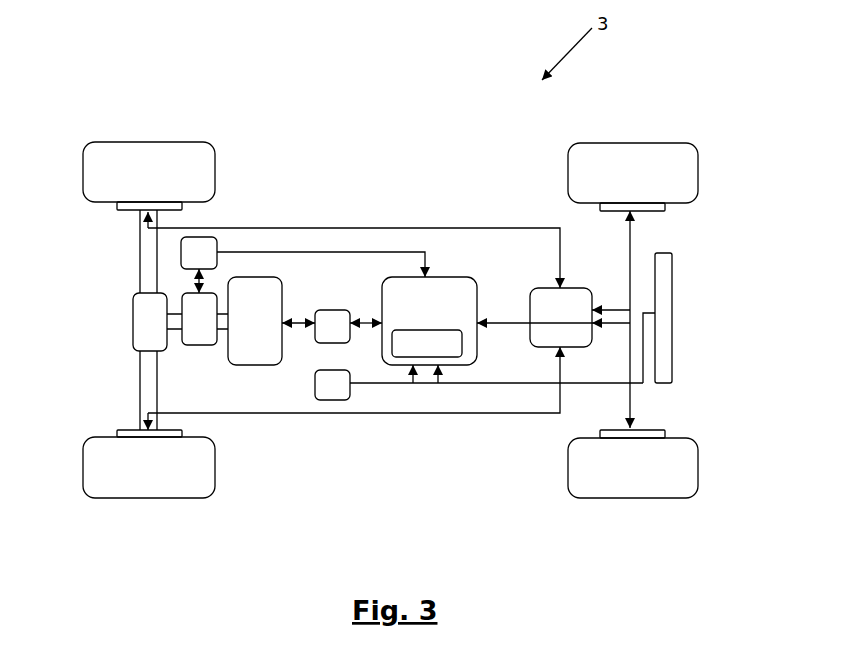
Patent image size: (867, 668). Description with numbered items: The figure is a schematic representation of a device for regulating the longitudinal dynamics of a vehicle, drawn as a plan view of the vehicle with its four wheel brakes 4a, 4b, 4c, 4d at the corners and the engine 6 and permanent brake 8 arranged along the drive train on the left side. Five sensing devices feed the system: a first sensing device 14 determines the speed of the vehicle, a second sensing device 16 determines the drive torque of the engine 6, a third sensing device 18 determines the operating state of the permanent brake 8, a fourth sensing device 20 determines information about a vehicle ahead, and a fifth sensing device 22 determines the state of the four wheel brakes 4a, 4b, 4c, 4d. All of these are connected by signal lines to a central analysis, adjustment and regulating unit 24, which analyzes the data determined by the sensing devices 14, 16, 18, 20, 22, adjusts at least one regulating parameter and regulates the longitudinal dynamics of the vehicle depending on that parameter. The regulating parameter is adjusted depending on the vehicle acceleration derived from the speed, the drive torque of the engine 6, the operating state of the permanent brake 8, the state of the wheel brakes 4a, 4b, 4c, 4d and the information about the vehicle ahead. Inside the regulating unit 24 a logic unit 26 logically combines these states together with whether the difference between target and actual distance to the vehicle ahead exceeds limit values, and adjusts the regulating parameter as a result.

The wheel brake 4a is at (117, 210).
The wheel brake 4b is at (127, 428).
The wheel brake 4c is at (662, 432).
The wheel brake 4d is at (643, 212).
The engine 6 is at (252, 365).
The permanent brake 8 is at (198, 345).
The first sensing device 14 is at (330, 400).
The second sensing device 16 is at (330, 310).
The third sensing device 18 is at (200, 237).
The fourth sensing device 20 is at (673, 330).
The fifth sensing device 22 is at (540, 288).
The analysis, adjustment and regulating unit 24 is at (445, 277).
The logic unit 26 is at (427, 357).